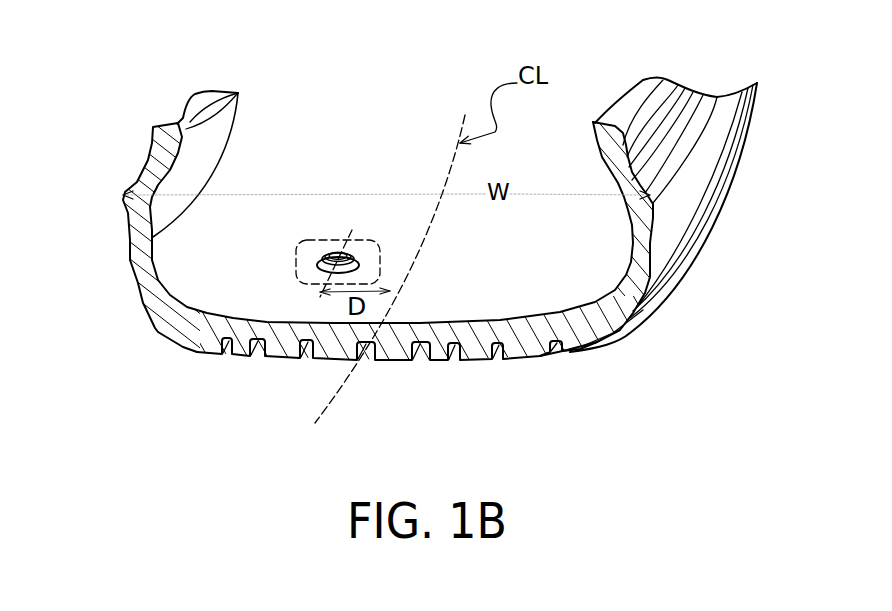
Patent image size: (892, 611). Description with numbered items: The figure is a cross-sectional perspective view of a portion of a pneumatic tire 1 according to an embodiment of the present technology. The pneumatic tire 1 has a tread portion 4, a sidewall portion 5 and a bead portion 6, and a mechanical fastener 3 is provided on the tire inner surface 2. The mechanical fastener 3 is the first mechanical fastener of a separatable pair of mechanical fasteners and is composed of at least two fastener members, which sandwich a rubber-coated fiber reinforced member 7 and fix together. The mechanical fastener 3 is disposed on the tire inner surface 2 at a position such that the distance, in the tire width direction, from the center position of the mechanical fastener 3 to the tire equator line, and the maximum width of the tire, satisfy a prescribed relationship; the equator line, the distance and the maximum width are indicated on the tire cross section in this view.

The pneumatic tire 1 is at (203, 350).
The tire inner surface 2 is at (307, 172).
The mechanical fastener 3 is at (322, 257).
The tread portion 4 is at (473, 358).
The sidewall portion 5 is at (635, 249).
The bead portion 6 is at (625, 163).
The rubber-coated fiber reinforced member 7 is at (297, 271).